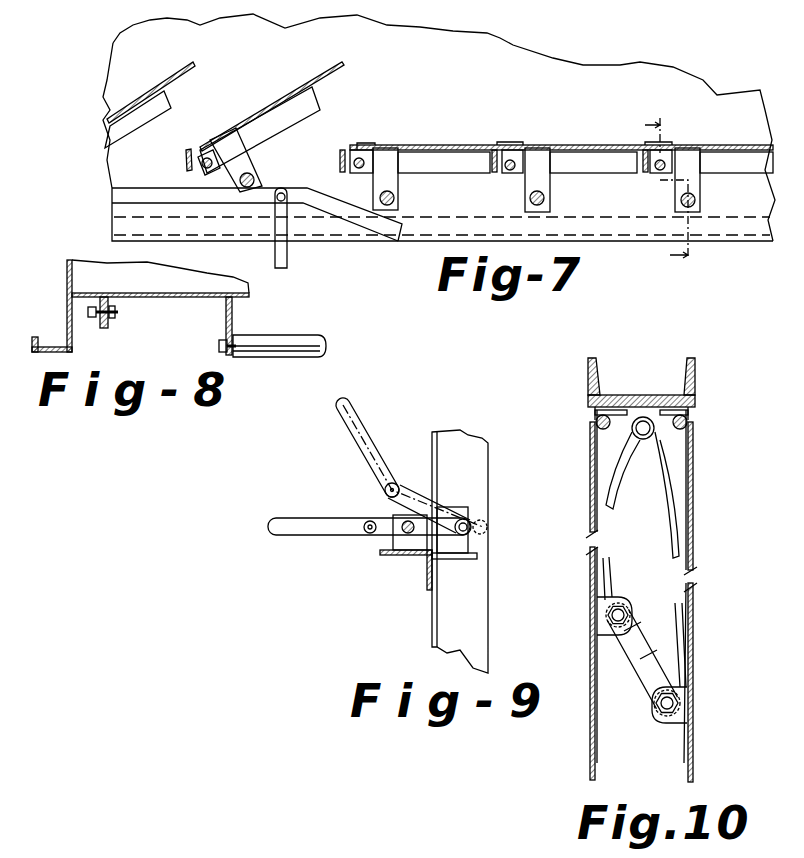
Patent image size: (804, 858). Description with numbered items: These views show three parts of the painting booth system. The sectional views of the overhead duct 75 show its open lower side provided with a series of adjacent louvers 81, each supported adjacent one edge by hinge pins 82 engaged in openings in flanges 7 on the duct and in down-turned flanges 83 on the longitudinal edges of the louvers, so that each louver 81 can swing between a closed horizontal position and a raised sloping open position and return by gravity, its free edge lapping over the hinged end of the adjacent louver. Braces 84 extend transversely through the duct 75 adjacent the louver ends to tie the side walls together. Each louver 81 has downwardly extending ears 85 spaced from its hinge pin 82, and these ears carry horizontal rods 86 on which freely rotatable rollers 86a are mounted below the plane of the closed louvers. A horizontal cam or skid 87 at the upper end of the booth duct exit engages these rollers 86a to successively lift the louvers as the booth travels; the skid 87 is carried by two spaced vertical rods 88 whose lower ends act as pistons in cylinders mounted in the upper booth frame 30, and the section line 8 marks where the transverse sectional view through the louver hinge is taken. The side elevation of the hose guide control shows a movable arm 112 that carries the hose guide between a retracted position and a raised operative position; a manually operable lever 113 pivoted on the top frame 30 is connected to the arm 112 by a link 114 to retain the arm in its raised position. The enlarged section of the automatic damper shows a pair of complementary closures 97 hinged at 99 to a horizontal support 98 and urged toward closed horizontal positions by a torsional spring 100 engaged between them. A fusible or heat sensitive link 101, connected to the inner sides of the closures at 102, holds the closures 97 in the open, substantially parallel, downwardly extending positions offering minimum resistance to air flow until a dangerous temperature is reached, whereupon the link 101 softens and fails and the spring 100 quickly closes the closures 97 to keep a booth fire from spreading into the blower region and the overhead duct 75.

In FIG. 7, the louvers 81 is at (167, 88).
In FIG. 7, the hinge pins 82 is at (510, 165).
In FIG. 8, the hinge pins 82 is at (115, 312).
In FIG. 7, the down-turned flanges 83 is at (585, 174).
In FIG. 8, the down-turned flanges 83 is at (105, 328).
In FIG. 7, the braces 84 is at (340, 163).
In FIG. 7, the lugs or ears 85 is at (272, 163).
In FIG. 8, the lugs or ears 85 is at (232, 318).
In FIG. 7, the horizontal rods 86 is at (394, 200).
In FIG. 8, the horizontal rods 86 is at (235, 352).
In FIG. 7, the tubes or rollers 86a is at (544, 200).
In FIG. 8, the tubes or rollers 86a is at (300, 342).
In FIG. 7, the cam or skid 87 is at (162, 187).
In FIG. 7, the vertical rods 88 is at (288, 258).
In FIG. 7, the section line 8— 8 is at (665, 191).
In FIG. 8, the overhead duct 75 is at (65, 265).
In FIG. 8, the flanges 7 is at (98, 320).
In FIG. 9, the movable arm 112 is at (483, 490).
In FIG. 9, the manually operable lever 113 is at (312, 530).
In FIG. 9, the link 114 is at (407, 498).
In FIG. 9, the upper frame 30 is at (407, 555).
In FIG. 10, the complementary closures 97 is at (592, 510).
In FIG. 10, the horizontal support 98 is at (695, 393).
In FIG. 10, the hinge 99 is at (692, 417).
In FIG. 10, the torsional spring 100 is at (678, 550).
In FIG. 10, the fusible or heat sensitive link 101 is at (645, 670).
In FIG. 10, the link connection 102 is at (610, 615).